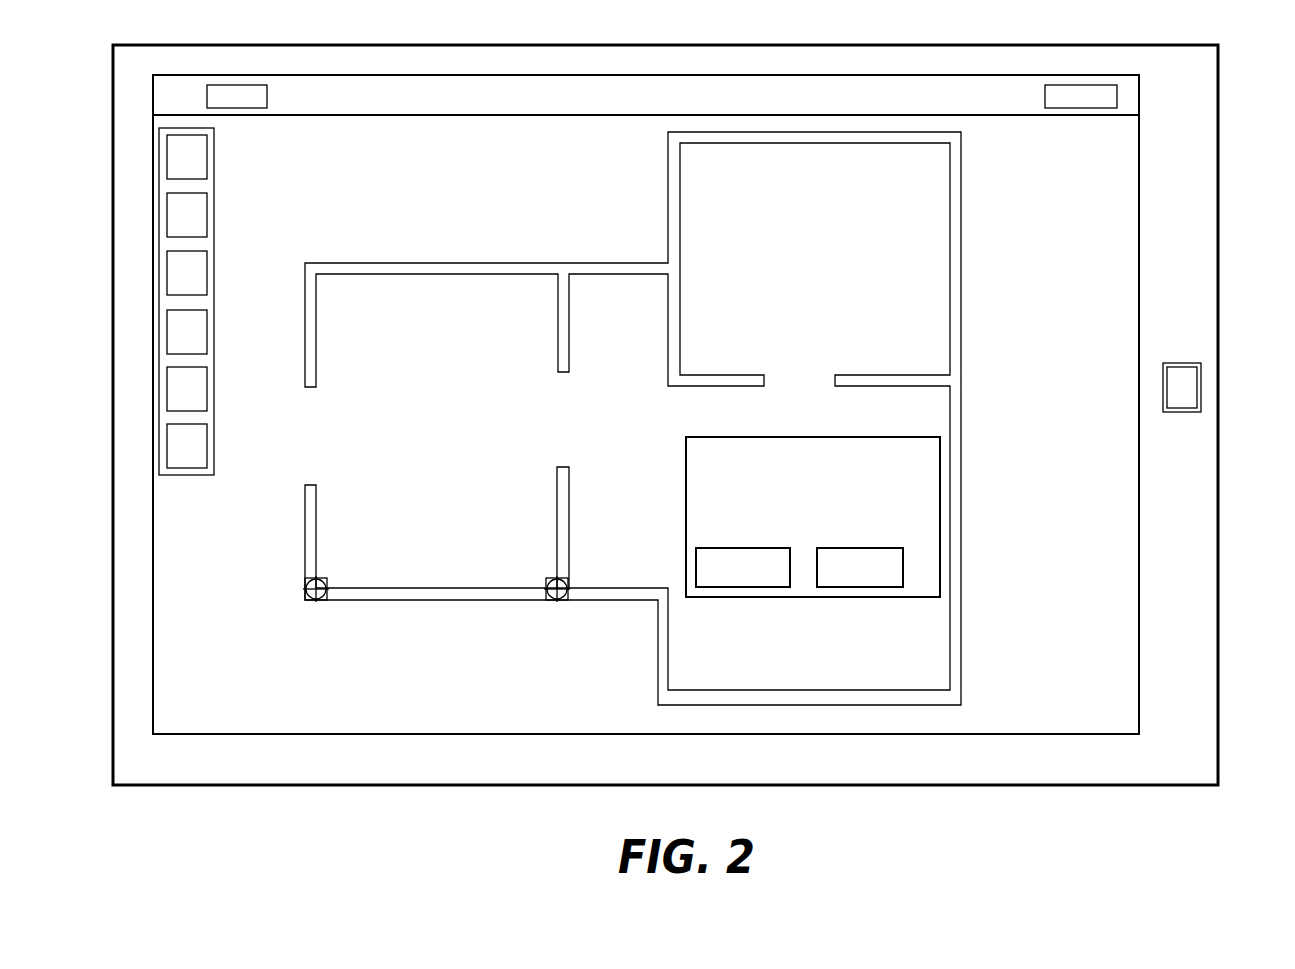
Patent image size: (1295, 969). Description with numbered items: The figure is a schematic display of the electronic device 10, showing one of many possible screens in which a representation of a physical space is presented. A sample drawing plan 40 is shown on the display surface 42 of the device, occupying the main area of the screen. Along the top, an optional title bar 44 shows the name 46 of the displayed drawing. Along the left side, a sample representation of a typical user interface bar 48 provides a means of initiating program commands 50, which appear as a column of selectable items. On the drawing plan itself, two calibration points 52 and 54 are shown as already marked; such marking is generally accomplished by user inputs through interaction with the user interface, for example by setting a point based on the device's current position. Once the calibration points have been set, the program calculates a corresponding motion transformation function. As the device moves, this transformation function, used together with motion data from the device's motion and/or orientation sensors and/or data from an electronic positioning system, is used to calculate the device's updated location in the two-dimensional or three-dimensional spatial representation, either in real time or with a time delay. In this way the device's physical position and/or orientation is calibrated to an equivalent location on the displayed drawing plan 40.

The electronic device 10 is at (1198, 172).
The drawing plan 40 is at (503, 139).
The display surface 42 is at (1118, 291).
The title bar 44 is at (733, 98).
The name 46 is at (620, 82).
The user interface bar 48 is at (165, 185).
The program commands 50 is at (172, 222).
The calibration point 52 is at (322, 614).
The calibration point 54 is at (553, 614).